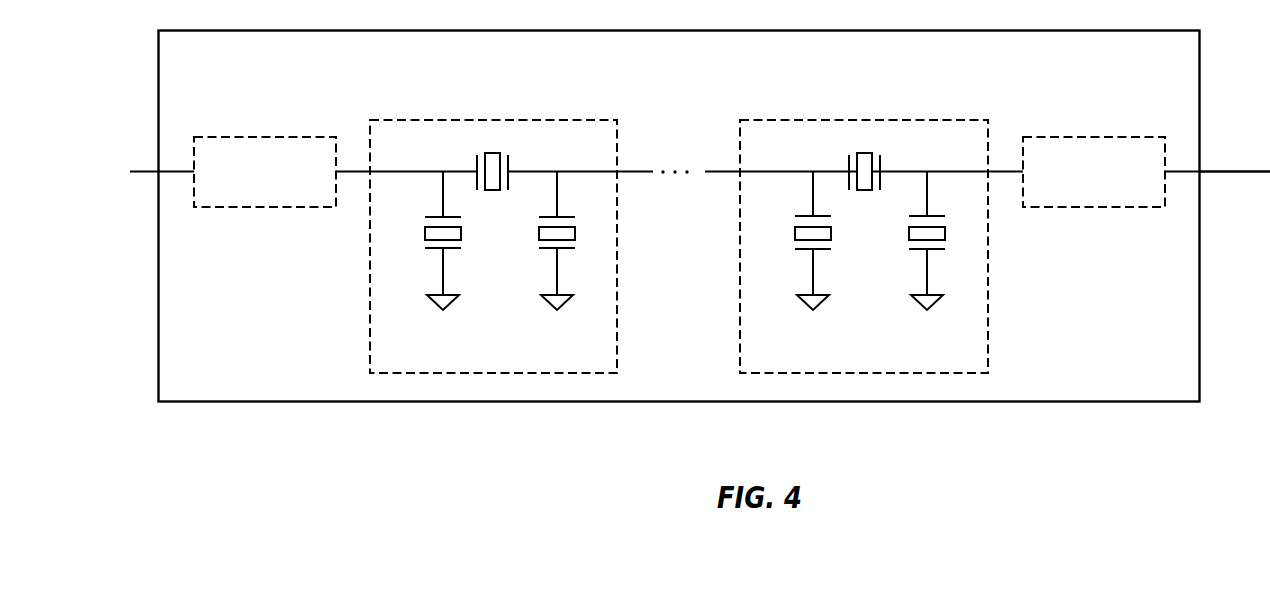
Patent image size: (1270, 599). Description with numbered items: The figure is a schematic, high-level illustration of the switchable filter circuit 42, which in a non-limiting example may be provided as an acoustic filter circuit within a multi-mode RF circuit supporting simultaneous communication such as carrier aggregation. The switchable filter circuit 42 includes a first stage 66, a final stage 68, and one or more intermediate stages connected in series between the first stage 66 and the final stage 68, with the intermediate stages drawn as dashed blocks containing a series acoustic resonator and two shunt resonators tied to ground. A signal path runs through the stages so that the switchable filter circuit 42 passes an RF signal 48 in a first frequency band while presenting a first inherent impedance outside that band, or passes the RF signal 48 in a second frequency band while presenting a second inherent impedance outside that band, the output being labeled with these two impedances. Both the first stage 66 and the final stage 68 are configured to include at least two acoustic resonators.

The switchable filter circuit 42 is at (492, 70).
The first stage 66 is at (275, 193).
The final stage 68 is at (1104, 191).
The RF signal 48 is at (1243, 167).